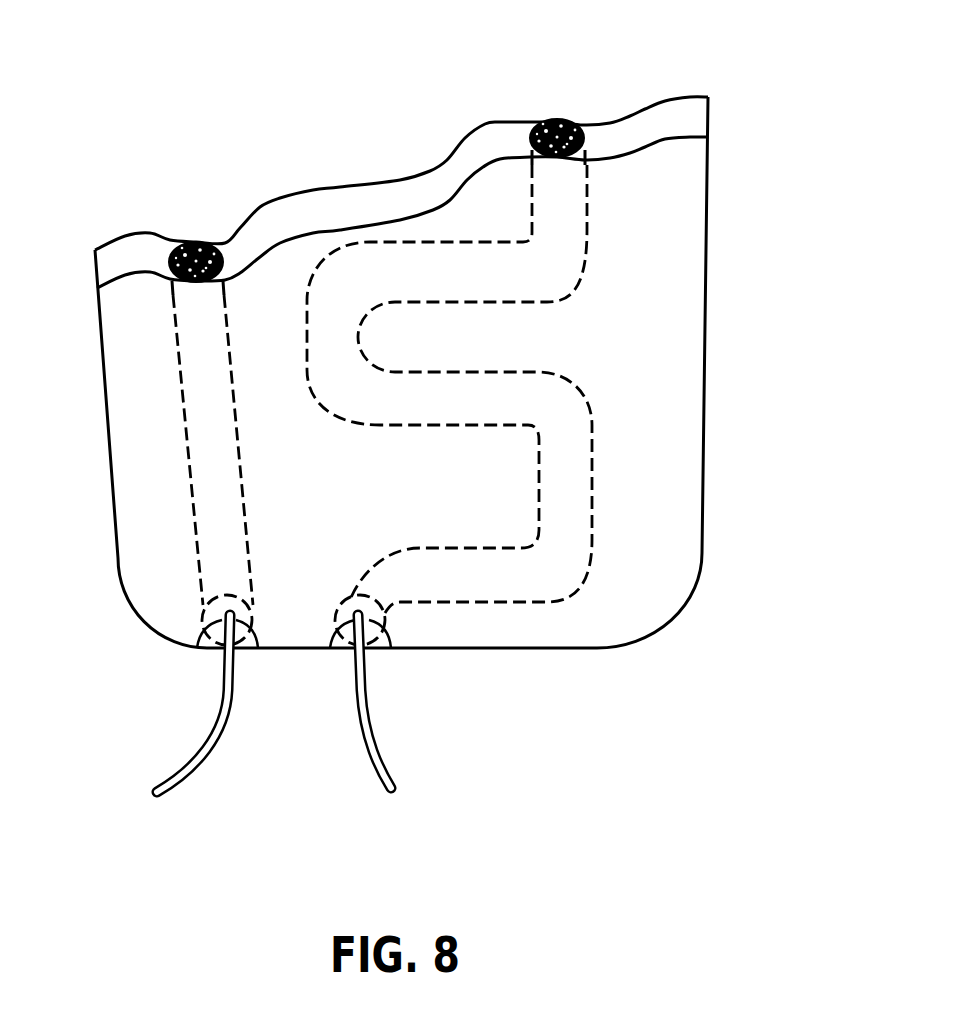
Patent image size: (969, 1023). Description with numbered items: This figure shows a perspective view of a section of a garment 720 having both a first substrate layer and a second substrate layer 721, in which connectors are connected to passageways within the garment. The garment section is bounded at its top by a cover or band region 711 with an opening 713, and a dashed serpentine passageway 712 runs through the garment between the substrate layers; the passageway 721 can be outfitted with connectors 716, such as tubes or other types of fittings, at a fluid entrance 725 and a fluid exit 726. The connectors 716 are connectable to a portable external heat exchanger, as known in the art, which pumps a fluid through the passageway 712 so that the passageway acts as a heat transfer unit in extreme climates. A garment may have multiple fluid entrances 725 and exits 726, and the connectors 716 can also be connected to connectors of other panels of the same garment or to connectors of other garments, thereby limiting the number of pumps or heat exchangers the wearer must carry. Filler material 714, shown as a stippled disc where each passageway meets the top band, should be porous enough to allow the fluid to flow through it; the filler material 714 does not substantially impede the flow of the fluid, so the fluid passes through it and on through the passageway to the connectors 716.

The top band / rim of bag 711 is at (670, 123).
The port opening 713 is at (587, 147).
The filler material 714 is at (533, 130).
The drainage bag 720 is at (708, 318).
The passageway 721 is at (633, 389).
The passageway 712 is at (192, 544).
The fluid entrance 725 is at (193, 655).
The fluid exit 726 is at (393, 660).
The connectors 716 is at (233, 697).